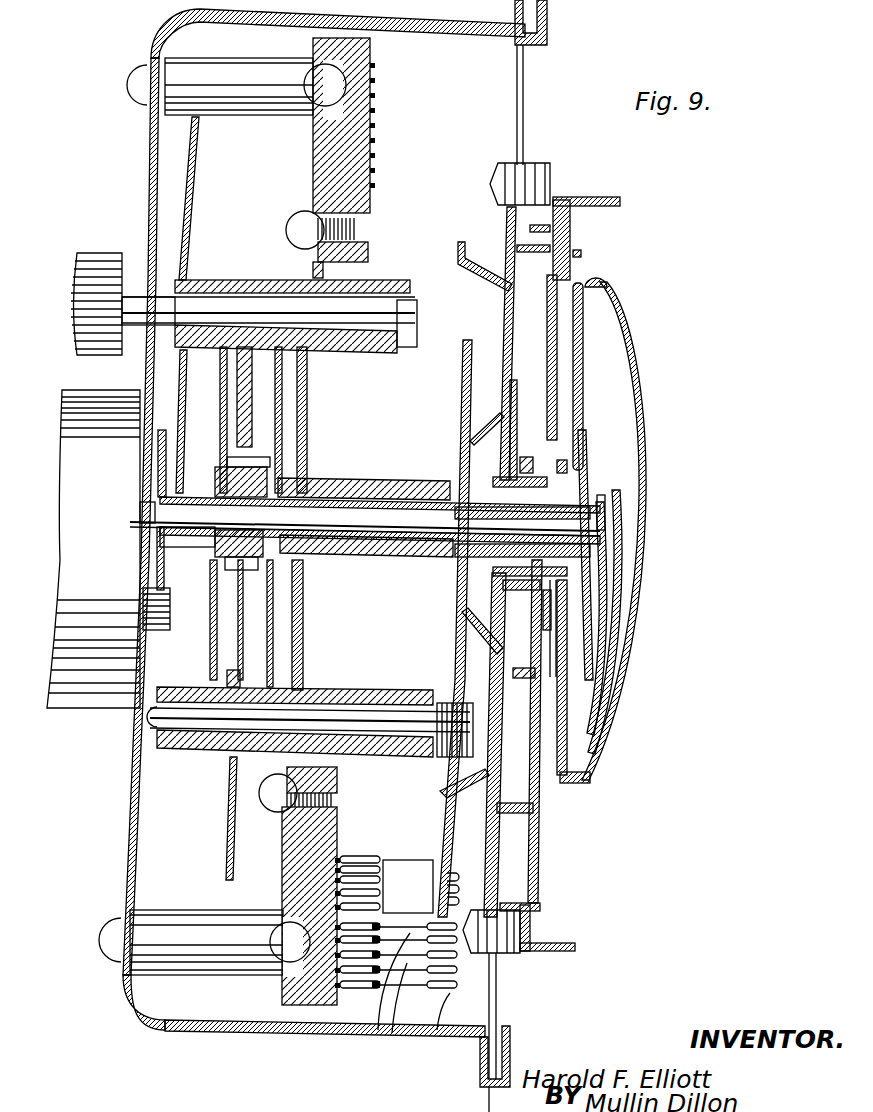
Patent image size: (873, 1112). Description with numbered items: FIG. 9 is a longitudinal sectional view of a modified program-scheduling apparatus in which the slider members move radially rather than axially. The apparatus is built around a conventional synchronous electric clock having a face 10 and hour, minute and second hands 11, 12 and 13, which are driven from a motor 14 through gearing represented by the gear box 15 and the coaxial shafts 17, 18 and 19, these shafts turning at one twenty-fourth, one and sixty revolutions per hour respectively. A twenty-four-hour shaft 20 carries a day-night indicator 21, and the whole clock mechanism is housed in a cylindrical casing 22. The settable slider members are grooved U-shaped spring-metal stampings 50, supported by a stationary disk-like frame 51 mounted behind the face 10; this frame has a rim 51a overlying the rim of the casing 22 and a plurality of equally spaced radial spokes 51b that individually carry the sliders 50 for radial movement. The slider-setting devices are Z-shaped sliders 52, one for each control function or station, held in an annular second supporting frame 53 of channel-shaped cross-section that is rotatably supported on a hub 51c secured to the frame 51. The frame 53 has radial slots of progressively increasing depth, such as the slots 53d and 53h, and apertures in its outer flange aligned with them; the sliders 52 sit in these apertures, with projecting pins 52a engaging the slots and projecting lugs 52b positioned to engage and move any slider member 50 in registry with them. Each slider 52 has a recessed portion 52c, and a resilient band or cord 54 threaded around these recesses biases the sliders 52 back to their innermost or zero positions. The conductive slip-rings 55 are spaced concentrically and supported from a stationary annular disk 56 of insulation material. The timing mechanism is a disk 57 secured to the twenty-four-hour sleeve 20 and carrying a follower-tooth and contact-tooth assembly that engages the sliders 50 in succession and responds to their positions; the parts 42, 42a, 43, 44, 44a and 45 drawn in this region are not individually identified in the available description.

The face 10 is at (638, 412).
The hour hand 11 is at (587, 641).
The minute hand 12 is at (598, 605).
The second hand 13 is at (618, 572).
The motor 14 is at (83, 697).
The gear box 15 is at (150, 825).
The coaxial shaft 17 is at (380, 483).
The coaxial shaft 18 is at (350, 480).
The coaxial shaft 19 is at (312, 483).
The 24-hour shaft 20 is at (453, 560).
The day-night indicator 21 is at (582, 450).
The cylindrical casing 22 is at (250, 1030).
The lamps 42 is at (443, 860).
The lamp lead 42a is at (451, 1028).
The panel 43 is at (410, 865).
The resistor coil 44 is at (405, 860).
The resistor terminals 44a is at (363, 890).
The leads 45 is at (382, 998).
The slider member 50 is at (553, 185).
The disk-like frame 51 is at (515, 232).
The rim 51a is at (550, 12).
The radial spokes 51b is at (528, 118).
The hub 51c is at (475, 572).
The Z-shaped slider 52 is at (605, 203).
The projecting lugs or pins 52a is at (583, 352).
The projecting lugs 52b is at (517, 905).
The recessed portion 52c is at (520, 670).
The annular second supporting frame 53 is at (590, 268).
The radial slot 53d is at (585, 690).
The radial slot 53h is at (607, 284).
The resilient band or cord 54 is at (535, 685).
The conductive slip-rings 55 is at (373, 127).
The stationary annular disk 56 is at (370, 205).
The disk 57 is at (500, 300).